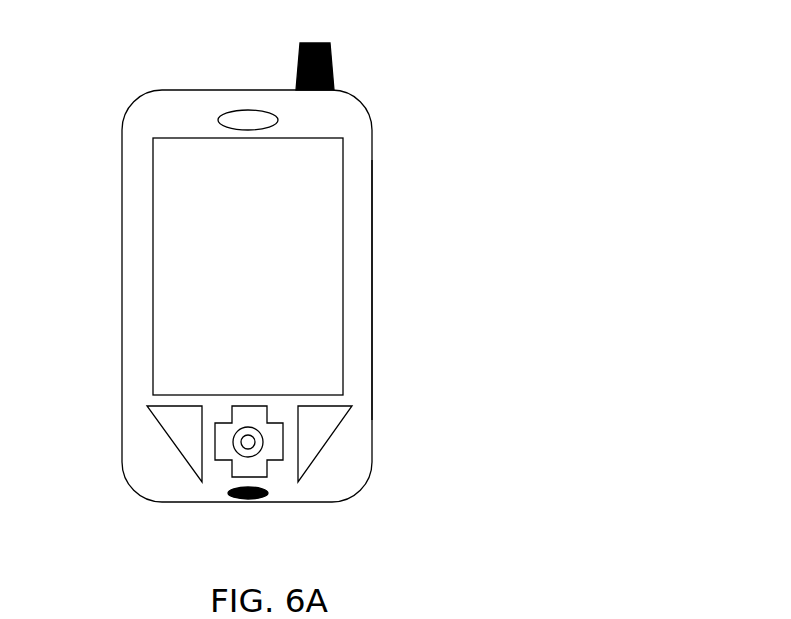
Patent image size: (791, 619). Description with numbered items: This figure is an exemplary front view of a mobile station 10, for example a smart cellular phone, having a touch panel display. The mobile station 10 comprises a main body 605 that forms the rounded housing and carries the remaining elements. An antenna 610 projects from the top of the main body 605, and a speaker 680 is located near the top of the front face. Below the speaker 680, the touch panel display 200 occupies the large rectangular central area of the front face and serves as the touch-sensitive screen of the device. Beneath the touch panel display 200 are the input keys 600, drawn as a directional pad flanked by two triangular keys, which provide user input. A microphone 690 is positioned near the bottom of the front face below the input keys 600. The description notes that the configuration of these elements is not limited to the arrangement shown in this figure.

The mobile station 10 is at (213, 266).
The touch panel display 200 is at (182, 250).
The input keys 600 is at (221, 461).
The main body 605 is at (370, 200).
The antenna 610 is at (333, 59).
The speaker 680 is at (230, 108).
The microphone 690 is at (269, 496).